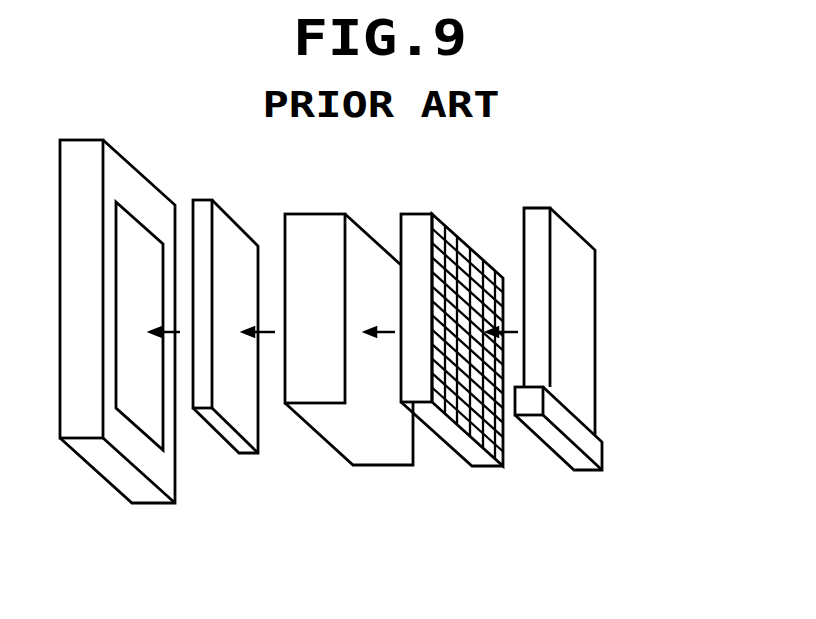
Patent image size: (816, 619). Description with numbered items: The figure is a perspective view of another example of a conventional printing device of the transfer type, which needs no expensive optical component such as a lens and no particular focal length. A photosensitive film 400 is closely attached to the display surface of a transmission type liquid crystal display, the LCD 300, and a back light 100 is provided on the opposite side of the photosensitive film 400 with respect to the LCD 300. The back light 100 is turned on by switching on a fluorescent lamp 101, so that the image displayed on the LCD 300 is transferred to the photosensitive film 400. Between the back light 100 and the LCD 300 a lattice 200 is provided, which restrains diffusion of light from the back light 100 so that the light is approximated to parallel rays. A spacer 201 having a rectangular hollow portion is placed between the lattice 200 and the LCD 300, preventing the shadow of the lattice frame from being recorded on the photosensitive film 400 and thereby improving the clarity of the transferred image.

The back light 100 is at (595, 270).
The fluorescent lamp 101 is at (568, 460).
The lattice 200 is at (470, 458).
The spacer 201 is at (363, 458).
The transmission type liquid crystal display 300 is at (225, 450).
The photosensitive film 400 is at (123, 483).